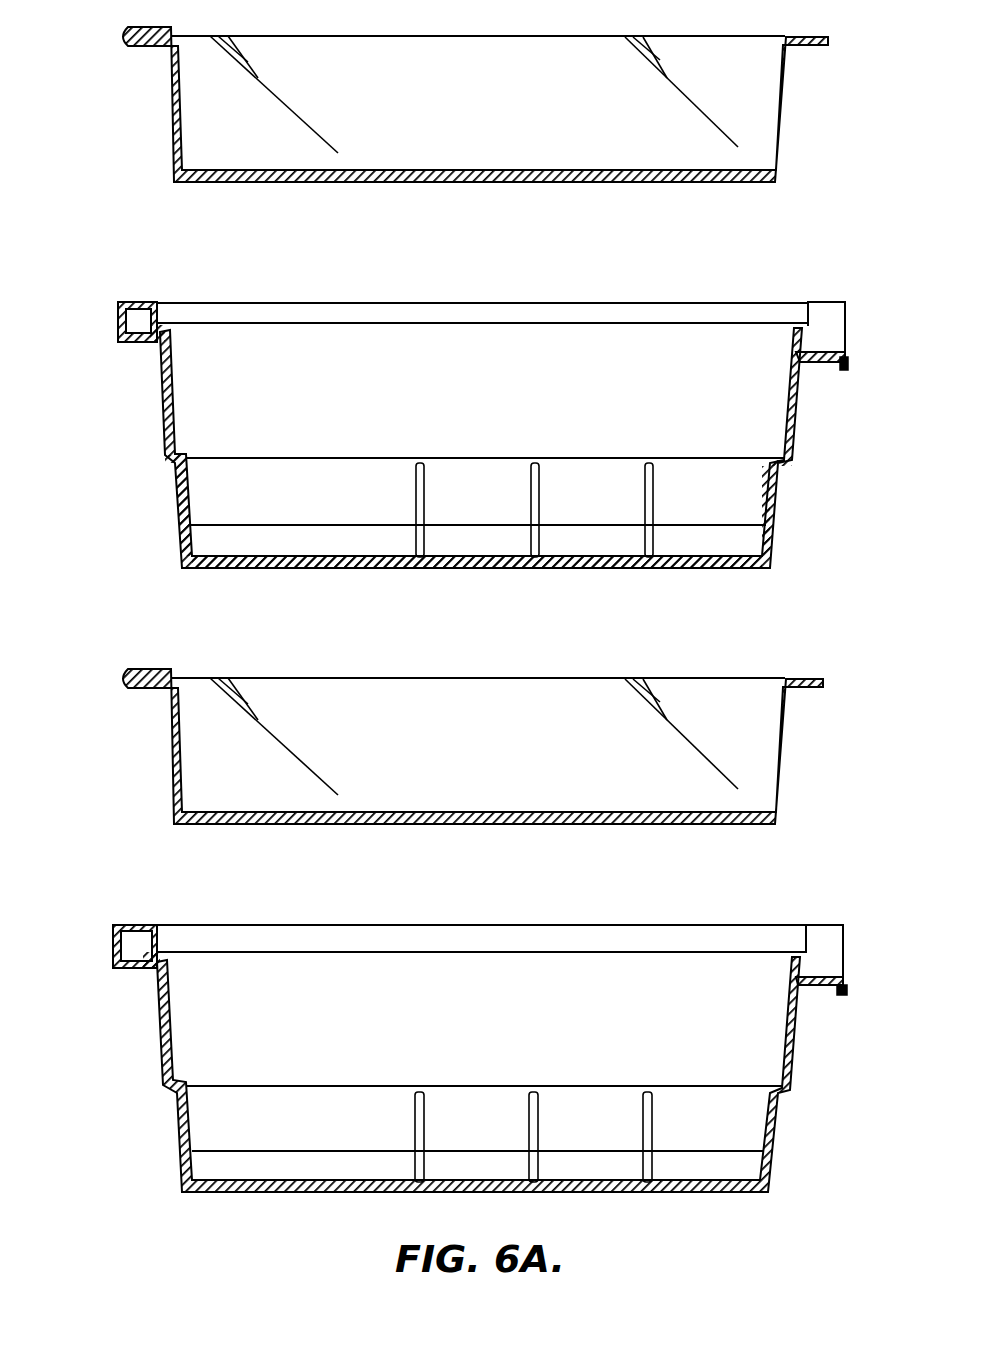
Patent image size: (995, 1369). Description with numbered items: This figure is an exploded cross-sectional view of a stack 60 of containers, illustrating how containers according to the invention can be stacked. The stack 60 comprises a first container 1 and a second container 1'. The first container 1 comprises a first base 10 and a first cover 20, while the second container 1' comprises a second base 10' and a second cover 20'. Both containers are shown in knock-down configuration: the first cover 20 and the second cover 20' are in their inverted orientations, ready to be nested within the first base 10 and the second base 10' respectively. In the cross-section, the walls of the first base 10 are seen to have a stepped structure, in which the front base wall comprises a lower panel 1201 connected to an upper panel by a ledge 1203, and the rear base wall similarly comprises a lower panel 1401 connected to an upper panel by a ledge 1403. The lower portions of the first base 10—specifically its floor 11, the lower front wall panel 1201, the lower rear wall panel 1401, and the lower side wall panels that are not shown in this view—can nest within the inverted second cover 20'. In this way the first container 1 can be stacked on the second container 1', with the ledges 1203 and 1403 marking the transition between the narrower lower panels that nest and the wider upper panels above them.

The stack 60 is at (99, 22).
The first container 1 is at (512, 309).
The second container 1' is at (513, 931).
The first cover 20 is at (467, 105).
The second cover 20' is at (462, 747).
The first base 10 is at (476, 435).
The second base 10' is at (473, 1058).
The floor 11 is at (314, 567).
The lower panel of rear base wall 1401 is at (180, 517).
The ledge of rear base wall 1403 is at (176, 468).
The lower panel of front base wall 1201 is at (775, 508).
The ledge of front base wall 1203 is at (783, 470).